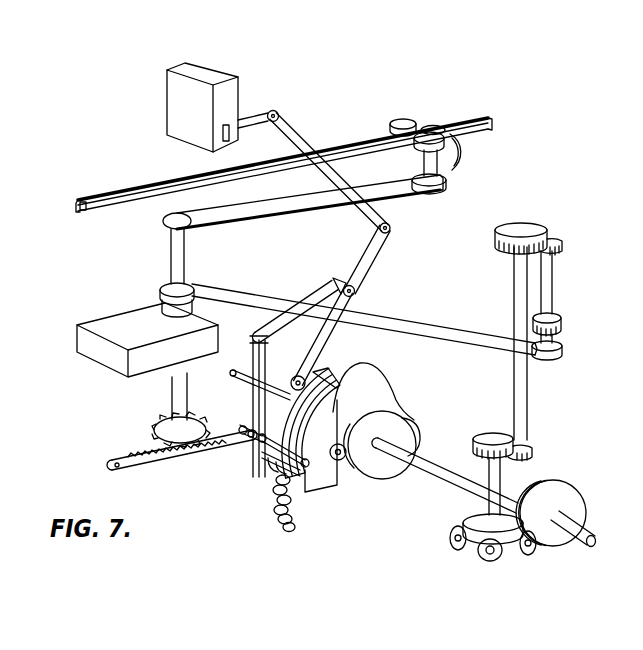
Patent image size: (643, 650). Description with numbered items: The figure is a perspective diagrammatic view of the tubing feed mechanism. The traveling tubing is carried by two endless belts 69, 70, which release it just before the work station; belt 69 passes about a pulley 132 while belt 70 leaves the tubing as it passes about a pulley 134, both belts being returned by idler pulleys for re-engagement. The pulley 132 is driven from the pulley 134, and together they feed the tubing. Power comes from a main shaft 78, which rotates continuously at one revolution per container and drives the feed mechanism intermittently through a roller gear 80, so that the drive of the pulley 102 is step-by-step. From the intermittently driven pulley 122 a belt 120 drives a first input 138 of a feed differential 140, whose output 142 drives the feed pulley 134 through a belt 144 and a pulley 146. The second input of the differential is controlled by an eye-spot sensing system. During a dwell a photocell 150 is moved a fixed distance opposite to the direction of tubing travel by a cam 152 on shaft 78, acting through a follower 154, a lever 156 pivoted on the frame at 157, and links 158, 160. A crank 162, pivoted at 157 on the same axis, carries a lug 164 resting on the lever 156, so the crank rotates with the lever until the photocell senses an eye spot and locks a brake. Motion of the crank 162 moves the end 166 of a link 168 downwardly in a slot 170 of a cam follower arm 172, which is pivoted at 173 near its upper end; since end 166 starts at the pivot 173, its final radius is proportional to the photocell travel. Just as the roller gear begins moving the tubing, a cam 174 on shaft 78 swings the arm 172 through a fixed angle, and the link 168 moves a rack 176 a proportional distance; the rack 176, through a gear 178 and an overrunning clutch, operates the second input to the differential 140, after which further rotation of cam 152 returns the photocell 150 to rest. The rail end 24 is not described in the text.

The rail end 24 is at (493, 122).
The endless belt 69 is at (397, 118).
The endless belt 70 is at (120, 203).
The main shaft 78 is at (428, 466).
The roller gear 80 is at (570, 507).
The pulley 102 is at (563, 322).
The belt 120 is at (397, 322).
The pulley 122 is at (564, 350).
The pulley 132 is at (418, 126).
The feed pulley 134 is at (437, 128).
The first input 138 is at (196, 285).
The feed differential 140 is at (107, 360).
The output 142 is at (174, 254).
The belt 144 is at (250, 210).
The pulley 146 is at (448, 181).
The photocell 150 is at (203, 78).
The cam 152 is at (353, 382).
The follower 154 is at (292, 381).
The lever 156 is at (368, 256).
The pivot 157 is at (360, 290).
The link 158 is at (282, 117).
The link 160 is at (258, 108).
The crank 162 is at (322, 290).
The lug 164 is at (296, 330).
The end 166 is at (281, 472).
The link 168 is at (272, 456).
The slot 170 is at (334, 397).
The cam follower arm 172 is at (325, 482).
The pivot 173 is at (340, 377).
The cam 174 is at (394, 425).
The rack 176 is at (133, 458).
The gear 178 is at (152, 428).